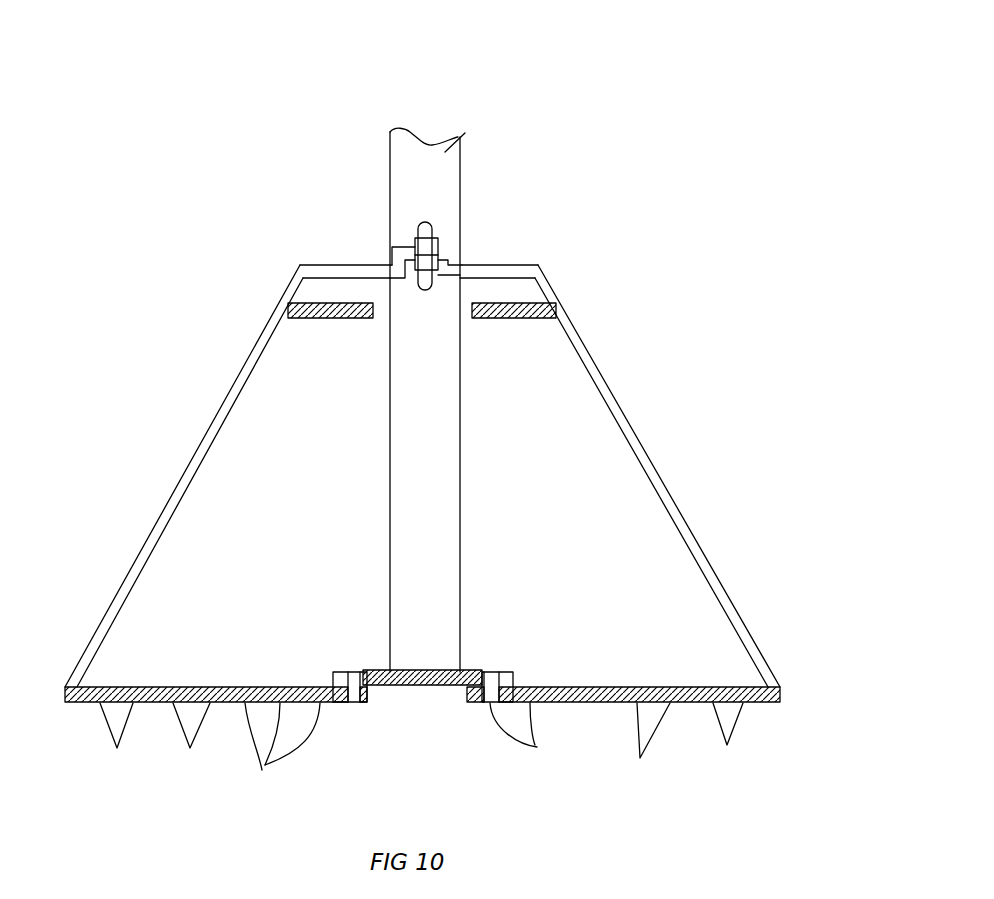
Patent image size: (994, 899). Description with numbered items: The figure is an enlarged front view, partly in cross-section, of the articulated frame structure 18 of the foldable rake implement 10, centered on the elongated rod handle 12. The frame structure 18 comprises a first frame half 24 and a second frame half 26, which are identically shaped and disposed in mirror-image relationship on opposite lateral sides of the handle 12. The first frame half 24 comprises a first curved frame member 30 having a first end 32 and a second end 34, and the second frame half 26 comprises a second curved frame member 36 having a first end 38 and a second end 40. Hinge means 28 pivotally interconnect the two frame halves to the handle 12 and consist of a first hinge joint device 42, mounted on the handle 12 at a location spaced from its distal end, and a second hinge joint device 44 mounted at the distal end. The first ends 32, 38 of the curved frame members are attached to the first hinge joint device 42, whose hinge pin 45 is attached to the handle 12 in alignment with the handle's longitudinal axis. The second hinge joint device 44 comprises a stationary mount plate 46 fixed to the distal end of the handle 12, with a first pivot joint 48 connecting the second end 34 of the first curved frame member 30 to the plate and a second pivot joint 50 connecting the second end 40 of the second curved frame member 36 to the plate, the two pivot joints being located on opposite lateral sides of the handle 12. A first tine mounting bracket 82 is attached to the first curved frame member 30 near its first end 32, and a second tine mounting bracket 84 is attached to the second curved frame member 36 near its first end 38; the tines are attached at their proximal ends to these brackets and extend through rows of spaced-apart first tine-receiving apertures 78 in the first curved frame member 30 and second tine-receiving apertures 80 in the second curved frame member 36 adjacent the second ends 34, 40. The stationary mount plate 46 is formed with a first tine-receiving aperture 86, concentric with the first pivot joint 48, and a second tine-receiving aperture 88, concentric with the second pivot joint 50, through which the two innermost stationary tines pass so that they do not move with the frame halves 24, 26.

The foldable rake implement 10 is at (545, 55).
The elongated rod handle 12 is at (466, 135).
The hinge means 28 is at (464, 200).
The first hinge joint device 42 is at (467, 217).
The first end 32 is at (463, 262).
The first end 38 is at (388, 247).
The hinge pin 45 is at (426, 228).
The second curved frame member 36 is at (231, 388).
The first curved frame member 30 is at (587, 347).
The articulated frame structure 18 is at (658, 378).
The first frame half 24 is at (658, 452).
The second frame half 26 is at (152, 485).
The second tine mounting bracket 84 is at (335, 318).
The first tine mounting bracket 82 is at (508, 318).
The second hinge joint device 44 is at (378, 597).
The stationary mount plate 46 is at (427, 692).
The second tine-receiving aperture 88 is at (350, 672).
The first tine-receiving aperture 86 is at (493, 672).
The first pivot joint 48 is at (503, 672).
The second pivot joint 50 is at (347, 672).
The second end 34 is at (470, 703).
The second end 40 is at (373, 703).
The second tine-receiving apertures 80 is at (210, 756).
The first tine-receiving apertures 78 is at (616, 748).